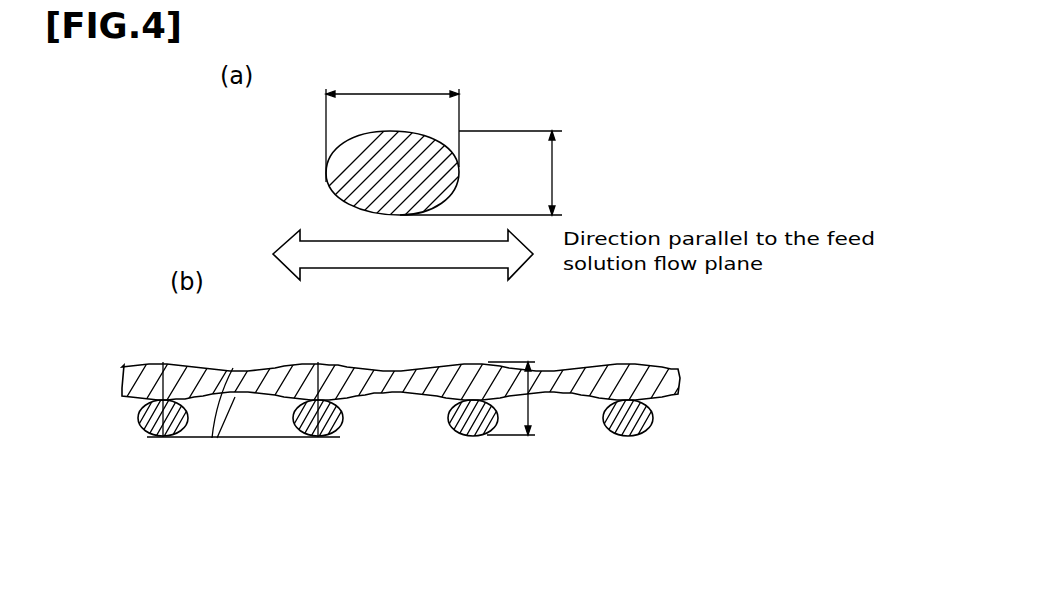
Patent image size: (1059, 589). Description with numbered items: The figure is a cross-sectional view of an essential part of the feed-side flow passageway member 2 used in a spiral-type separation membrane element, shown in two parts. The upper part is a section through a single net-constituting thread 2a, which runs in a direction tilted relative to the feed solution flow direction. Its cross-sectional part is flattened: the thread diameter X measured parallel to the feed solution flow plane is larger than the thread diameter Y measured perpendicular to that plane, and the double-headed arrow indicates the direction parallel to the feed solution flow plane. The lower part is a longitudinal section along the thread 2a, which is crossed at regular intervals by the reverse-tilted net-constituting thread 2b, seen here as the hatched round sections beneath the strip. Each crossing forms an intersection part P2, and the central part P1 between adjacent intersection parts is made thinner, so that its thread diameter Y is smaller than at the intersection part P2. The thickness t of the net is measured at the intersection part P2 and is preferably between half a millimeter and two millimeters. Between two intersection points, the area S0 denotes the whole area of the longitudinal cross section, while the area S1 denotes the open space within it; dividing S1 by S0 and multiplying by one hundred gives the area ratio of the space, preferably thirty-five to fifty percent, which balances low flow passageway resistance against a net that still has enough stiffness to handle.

The feed-side flow passageway member 2 is at (554, 347).
The net-constituting thread 2a is at (332, 190).
The net-constituting thread 2b is at (318, 437).
The central part P1 is at (394, 363).
The intersection part P2 is at (162, 358).
The area between intersection points S0 is at (253, 364).
The area of the space S1 is at (243, 416).
The thread diameter in a direction parallel to the feed solution flow plane X is at (392, 125).
The thread diameter in a direction perpendicular to the feed solution flow plane Y is at (486, 173).
The thickness of the intersection part t is at (516, 398).